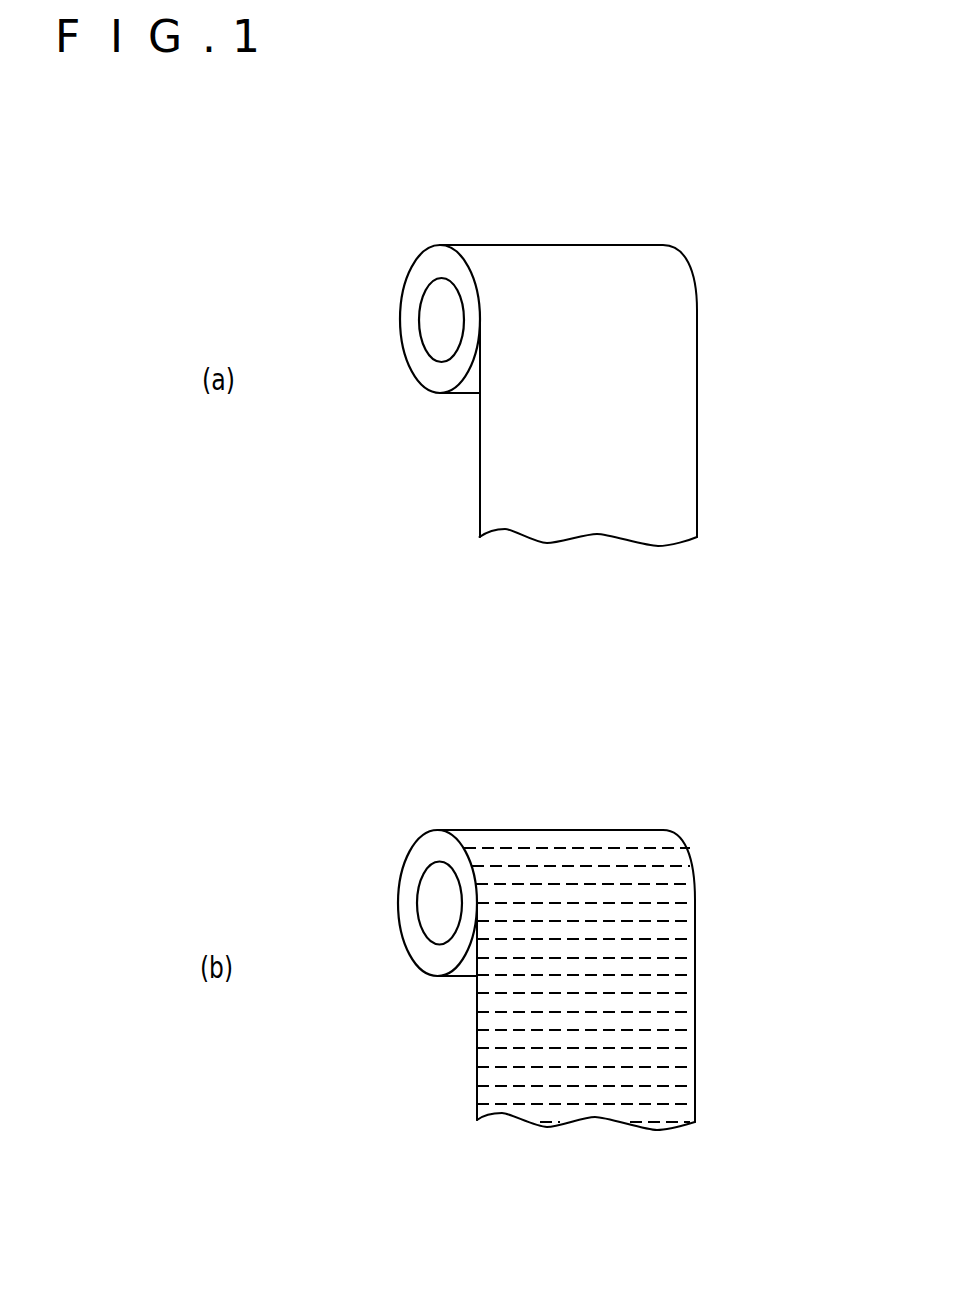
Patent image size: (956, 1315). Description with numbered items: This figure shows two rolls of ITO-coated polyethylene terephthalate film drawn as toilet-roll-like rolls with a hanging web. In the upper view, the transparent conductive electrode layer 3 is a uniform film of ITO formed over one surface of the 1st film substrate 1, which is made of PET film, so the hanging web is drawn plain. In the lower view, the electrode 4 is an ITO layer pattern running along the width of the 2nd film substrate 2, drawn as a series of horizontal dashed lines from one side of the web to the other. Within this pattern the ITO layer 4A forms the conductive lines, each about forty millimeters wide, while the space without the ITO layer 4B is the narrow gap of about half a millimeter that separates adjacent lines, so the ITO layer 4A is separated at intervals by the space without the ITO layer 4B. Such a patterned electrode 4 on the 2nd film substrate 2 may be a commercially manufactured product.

The 1st film substrate 1 is at (417, 263).
The 2nd film substrate 2 is at (415, 847).
The transparent conductive electrode layer 3 is at (616, 285).
The electrode 4 is at (668, 947).
The ITO layer 4A is at (632, 1003).
The space without the ITO layer 4B is at (663, 866).